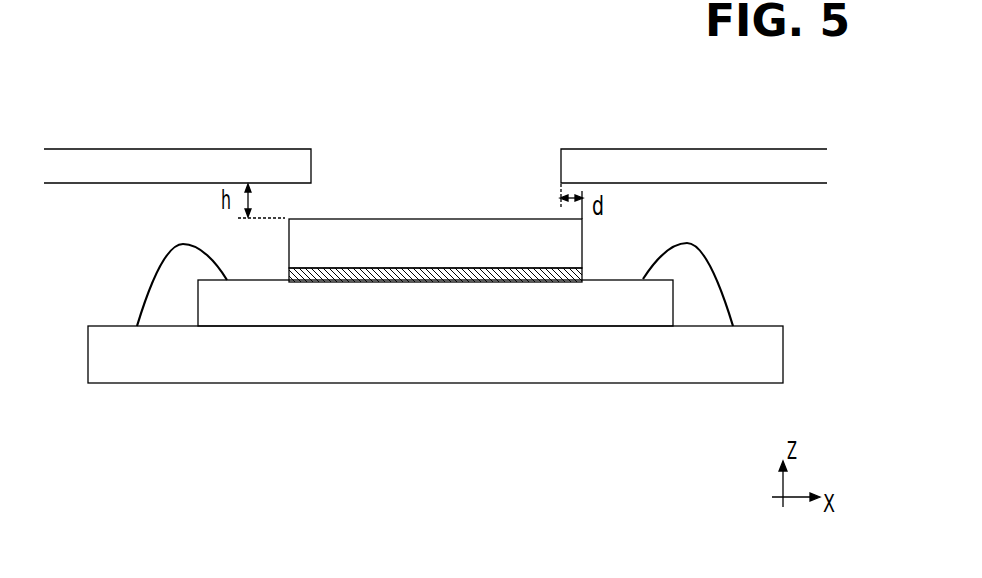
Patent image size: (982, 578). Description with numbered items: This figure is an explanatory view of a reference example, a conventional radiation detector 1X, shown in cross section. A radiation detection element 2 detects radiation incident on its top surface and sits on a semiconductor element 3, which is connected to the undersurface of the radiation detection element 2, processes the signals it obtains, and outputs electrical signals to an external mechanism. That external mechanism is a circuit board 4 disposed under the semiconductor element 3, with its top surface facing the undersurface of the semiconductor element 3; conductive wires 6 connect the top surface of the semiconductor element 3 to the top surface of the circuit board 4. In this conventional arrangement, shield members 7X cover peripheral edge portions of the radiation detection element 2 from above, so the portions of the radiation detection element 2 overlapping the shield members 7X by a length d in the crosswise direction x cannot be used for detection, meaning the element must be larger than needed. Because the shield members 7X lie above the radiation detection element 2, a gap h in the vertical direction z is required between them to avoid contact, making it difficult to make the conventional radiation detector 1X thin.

The conventional radiation detector 1X is at (90, 58).
The shield member 7X is at (201, 148).
The radiation detection element 2 is at (428, 218).
The semiconductor element 3 is at (673, 313).
The circuit board 4 is at (280, 384).
The conductive wire 6 is at (152, 272).